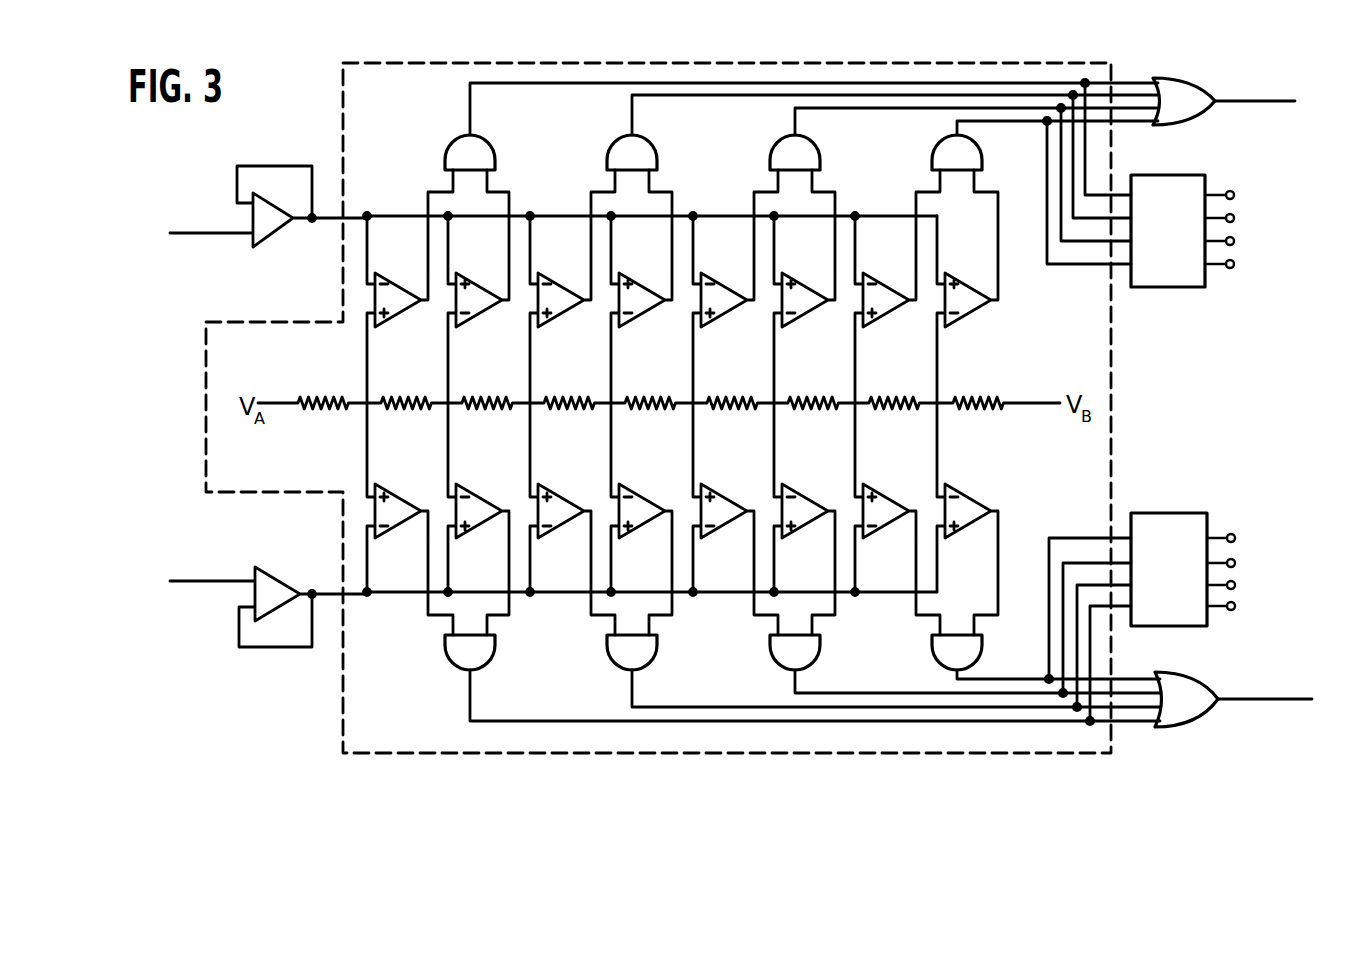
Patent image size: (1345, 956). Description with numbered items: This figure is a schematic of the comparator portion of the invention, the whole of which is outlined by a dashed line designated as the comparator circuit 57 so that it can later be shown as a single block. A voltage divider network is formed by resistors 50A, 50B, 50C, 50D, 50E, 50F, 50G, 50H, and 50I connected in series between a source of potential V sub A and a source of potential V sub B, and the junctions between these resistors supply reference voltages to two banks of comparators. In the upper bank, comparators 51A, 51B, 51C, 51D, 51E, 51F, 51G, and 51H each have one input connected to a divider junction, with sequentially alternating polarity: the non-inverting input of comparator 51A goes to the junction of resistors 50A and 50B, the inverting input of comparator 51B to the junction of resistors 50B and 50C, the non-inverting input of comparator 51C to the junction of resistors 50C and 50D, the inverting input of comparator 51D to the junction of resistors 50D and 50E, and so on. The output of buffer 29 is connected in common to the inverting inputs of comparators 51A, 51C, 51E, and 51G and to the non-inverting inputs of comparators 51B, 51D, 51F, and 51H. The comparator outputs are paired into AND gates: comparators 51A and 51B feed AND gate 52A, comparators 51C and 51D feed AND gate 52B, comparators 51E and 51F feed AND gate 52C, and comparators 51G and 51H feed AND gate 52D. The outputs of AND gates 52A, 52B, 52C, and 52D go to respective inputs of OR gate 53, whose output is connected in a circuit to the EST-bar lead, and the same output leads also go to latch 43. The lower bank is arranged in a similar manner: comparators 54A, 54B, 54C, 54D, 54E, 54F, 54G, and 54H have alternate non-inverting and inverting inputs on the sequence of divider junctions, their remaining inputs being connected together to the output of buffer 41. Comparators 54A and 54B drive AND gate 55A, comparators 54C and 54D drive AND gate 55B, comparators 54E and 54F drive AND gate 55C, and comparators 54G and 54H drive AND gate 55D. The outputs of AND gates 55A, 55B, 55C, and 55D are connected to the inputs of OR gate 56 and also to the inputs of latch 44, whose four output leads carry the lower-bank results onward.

The buffer 29 is at (271, 236).
The buffer 41 is at (301, 553).
The latch 43 is at (1198, 175).
The latch 44 is at (1158, 513).
The resistor 50A is at (346, 401).
The resistor 50B is at (427, 402).
The resistor 50C is at (508, 402).
The resistor 50D is at (590, 402).
The resistor 50E is at (671, 402).
The resistor 50F is at (753, 402).
The resistor 50G is at (834, 402).
The resistor 50H is at (915, 402).
The resistor 50I is at (995, 402).
The comparator 51A is at (408, 290).
The comparator 51B is at (489, 290).
The comparator 51C is at (571, 290).
The comparator 51D is at (652, 290).
The comparator 51E is at (734, 290).
The comparator 51F is at (815, 290).
The comparator 51G is at (896, 290).
The comparator 51H is at (978, 290).
The AND gate 52A is at (447, 160).
The AND gate 52B is at (609, 160).
The AND gate 52C is at (771, 160).
The AND gate 52D is at (931, 160).
The OR gate 53 is at (1213, 86).
The comparator 54A is at (408, 495).
The comparator 54B is at (489, 495).
The comparator 54C is at (571, 495).
The comparator 54D is at (652, 495).
The comparator 54E is at (734, 495).
The comparator 54F is at (815, 495).
The comparator 54G is at (896, 495).
The comparator 54H is at (978, 495).
The AND gate 55A is at (447, 650).
The AND gate 55B is at (609, 650).
The AND gate 55C is at (771, 648).
The AND gate 55D is at (933, 648).
The OR gate 56 is at (1199, 672).
The comparator circuit 57 is at (205, 412).